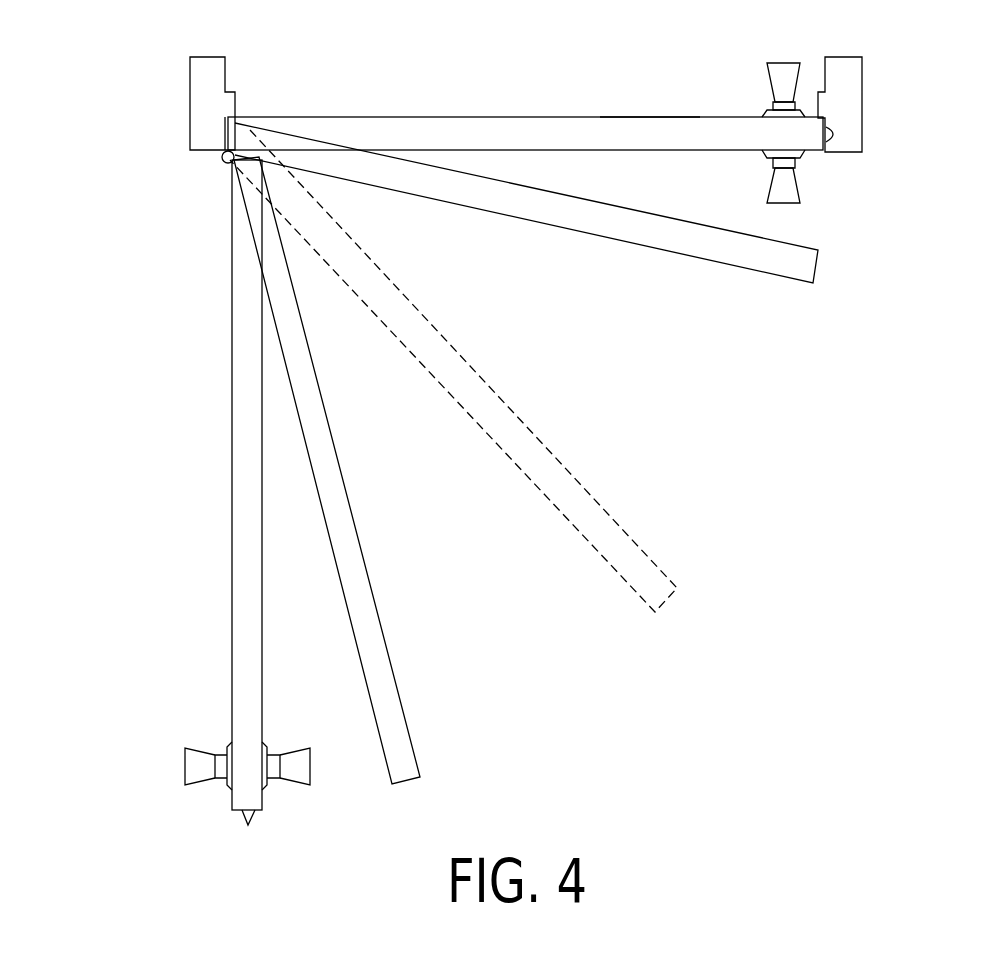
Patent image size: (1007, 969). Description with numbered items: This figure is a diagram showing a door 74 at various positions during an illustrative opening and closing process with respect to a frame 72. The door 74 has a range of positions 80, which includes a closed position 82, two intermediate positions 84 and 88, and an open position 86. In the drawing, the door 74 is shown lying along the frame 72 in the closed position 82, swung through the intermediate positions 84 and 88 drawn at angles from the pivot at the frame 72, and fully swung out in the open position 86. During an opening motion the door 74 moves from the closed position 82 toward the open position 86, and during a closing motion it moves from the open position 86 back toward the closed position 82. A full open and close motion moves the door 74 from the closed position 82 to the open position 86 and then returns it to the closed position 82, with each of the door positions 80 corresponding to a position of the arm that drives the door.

The frame 72 is at (190, 101).
The door 74 is at (441, 117).
The range of positions 80 is at (877, 119).
The closed position 82 is at (640, 117).
The intermediate position 84 is at (392, 660).
The open position 86 is at (265, 686).
The intermediate position 88 is at (705, 222).